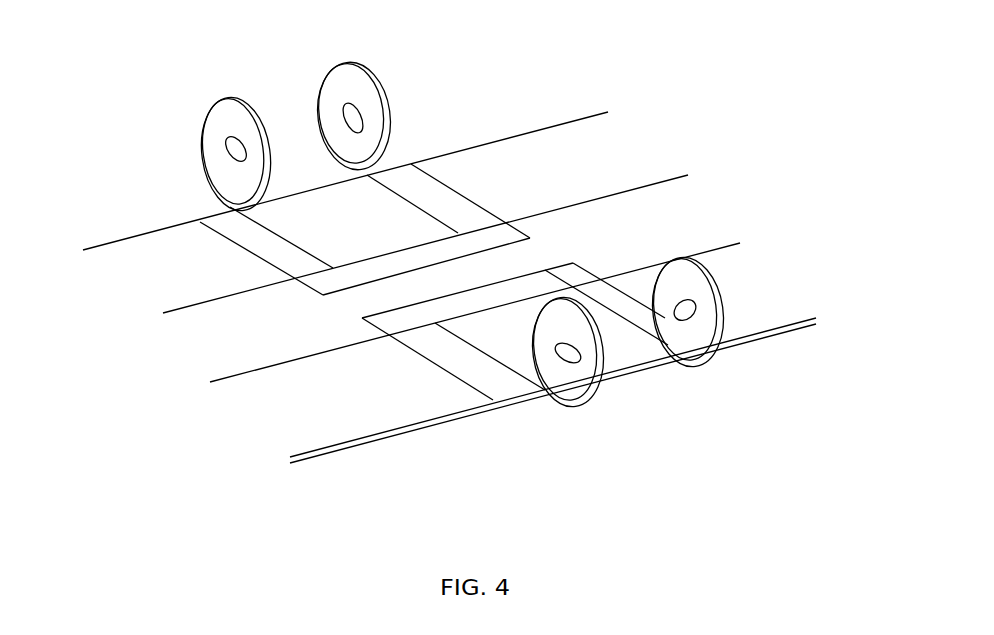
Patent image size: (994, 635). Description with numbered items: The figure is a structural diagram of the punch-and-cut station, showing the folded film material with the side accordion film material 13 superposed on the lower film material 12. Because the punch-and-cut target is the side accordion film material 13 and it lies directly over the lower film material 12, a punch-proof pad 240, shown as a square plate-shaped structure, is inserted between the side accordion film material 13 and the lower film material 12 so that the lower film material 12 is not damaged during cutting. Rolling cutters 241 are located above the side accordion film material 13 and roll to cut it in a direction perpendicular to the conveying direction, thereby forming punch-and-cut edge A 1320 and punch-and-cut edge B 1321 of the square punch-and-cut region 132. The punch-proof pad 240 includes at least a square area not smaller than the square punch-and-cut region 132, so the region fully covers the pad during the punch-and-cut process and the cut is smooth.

The lower film material 12 is at (677, 223).
The side accordion film material 13 is at (603, 134).
The square punch-and-cut region 132 is at (317, 233).
The punch-and-cut edge A 1320 is at (433, 200).
The punch-and-cut edge B 1321 is at (266, 244).
The punch-proof pad 240 is at (328, 295).
The rolling cutter 241 is at (709, 322).